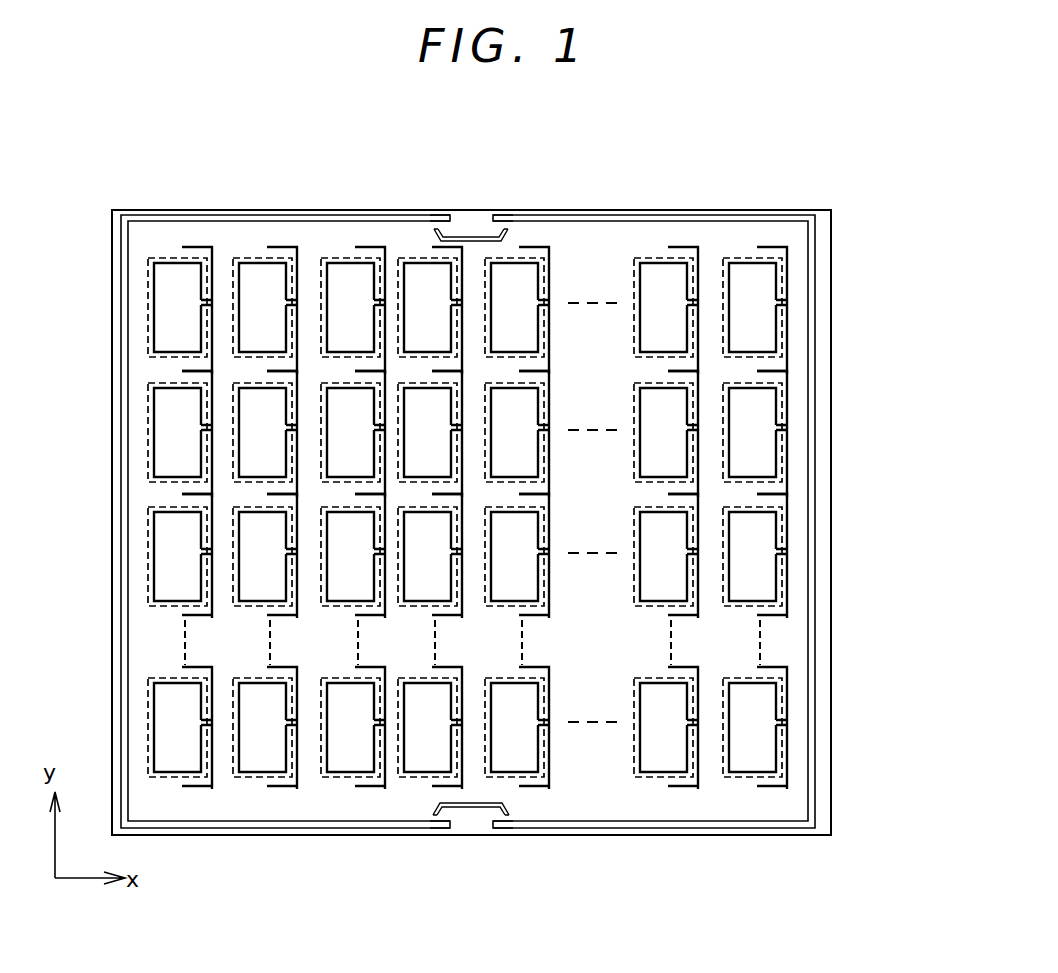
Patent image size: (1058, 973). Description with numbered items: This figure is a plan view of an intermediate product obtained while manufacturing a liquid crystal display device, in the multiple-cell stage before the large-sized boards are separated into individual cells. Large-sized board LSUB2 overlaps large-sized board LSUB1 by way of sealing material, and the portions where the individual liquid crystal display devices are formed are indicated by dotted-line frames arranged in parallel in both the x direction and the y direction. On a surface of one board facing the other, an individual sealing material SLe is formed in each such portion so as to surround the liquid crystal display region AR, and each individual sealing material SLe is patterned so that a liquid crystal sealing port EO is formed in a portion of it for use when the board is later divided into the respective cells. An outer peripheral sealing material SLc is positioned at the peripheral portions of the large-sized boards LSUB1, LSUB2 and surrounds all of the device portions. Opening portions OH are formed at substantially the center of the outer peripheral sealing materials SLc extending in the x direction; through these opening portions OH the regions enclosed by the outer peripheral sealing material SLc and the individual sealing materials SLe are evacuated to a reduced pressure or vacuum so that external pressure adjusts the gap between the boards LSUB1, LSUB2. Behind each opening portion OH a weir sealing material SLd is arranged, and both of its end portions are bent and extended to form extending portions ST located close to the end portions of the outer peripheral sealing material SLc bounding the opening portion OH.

The liquid crystal display region AR is at (465, 517).
The liquid crystal sealing port EO is at (212, 297).
The individual sealing material SLe is at (156, 315).
The outer peripheral sealing material SLc is at (810, 662).
The weir sealing material SLd is at (466, 238).
The extending portion ST is at (439, 230).
The opening portion OH is at (488, 218).
The large-sized board LSUB1 is at (481, 467).
The large-sized board LSUB2 is at (799, 209).